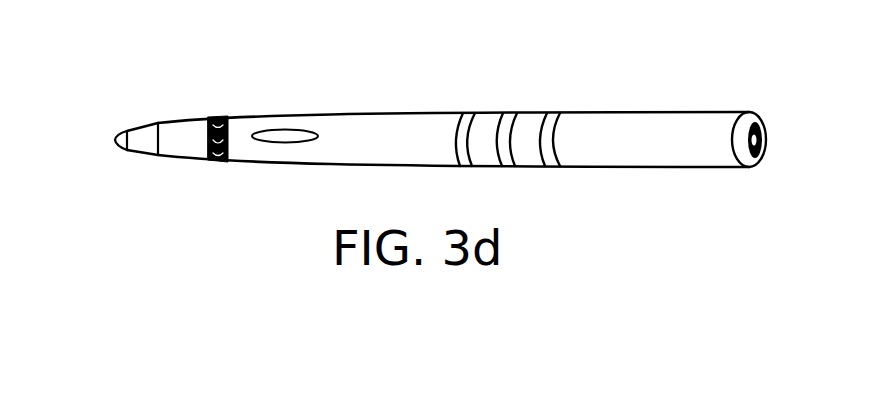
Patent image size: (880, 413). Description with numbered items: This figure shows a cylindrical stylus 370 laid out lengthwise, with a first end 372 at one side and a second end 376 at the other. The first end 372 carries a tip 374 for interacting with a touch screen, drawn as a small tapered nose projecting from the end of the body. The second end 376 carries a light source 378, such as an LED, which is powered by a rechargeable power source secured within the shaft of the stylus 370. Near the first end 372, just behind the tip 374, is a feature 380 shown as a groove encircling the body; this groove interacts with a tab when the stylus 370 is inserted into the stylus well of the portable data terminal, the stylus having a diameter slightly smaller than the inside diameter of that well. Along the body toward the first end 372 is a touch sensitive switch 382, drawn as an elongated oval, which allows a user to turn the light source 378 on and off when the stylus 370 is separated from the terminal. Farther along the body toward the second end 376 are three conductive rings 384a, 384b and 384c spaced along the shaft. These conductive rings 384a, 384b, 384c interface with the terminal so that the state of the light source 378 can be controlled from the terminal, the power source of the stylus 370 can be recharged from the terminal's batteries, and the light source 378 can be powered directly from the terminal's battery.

The cylindrical stylus 370 is at (713, 227).
The first end 372 is at (182, 125).
The tip 374 is at (115, 139).
The second end 376 is at (667, 130).
The light source 378 is at (767, 132).
The feature 380 is at (225, 162).
The touch sensitive switch 382 is at (287, 130).
The conductive ring 384a is at (465, 128).
The conductive ring 384b is at (503, 128).
The conductive ring 384c is at (550, 125).